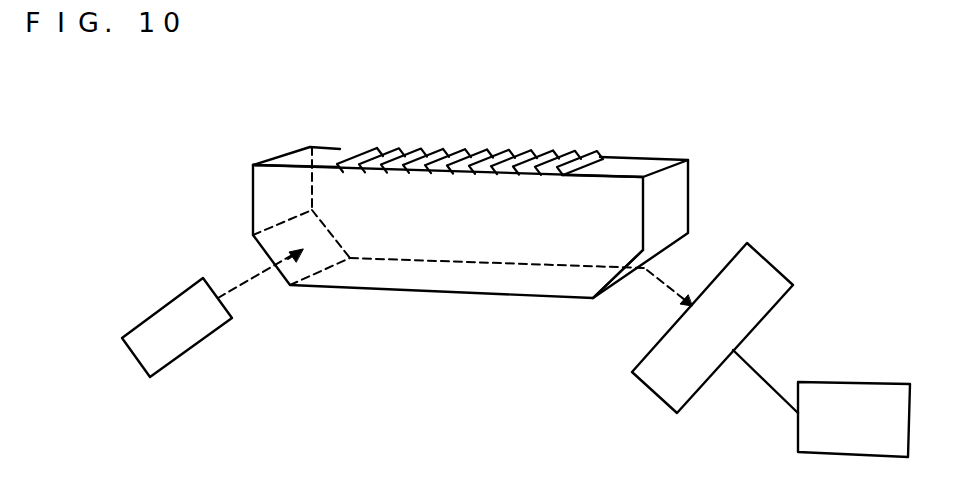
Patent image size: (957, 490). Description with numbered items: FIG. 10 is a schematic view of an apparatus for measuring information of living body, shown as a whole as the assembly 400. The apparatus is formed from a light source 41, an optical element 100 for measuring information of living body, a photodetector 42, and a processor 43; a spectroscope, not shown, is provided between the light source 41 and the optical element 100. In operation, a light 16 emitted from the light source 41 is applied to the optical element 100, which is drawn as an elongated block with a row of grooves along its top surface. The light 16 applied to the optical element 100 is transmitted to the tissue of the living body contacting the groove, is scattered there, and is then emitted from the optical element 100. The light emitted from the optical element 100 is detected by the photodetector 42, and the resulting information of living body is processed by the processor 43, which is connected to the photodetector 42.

The optical element 400 is at (288, 115).
The optical element for measuring information of living body 100 is at (598, 200).
The light 16 is at (253, 281).
The light source 41 is at (197, 344).
The photodetector 42 is at (767, 259).
The processor 43 is at (850, 381).